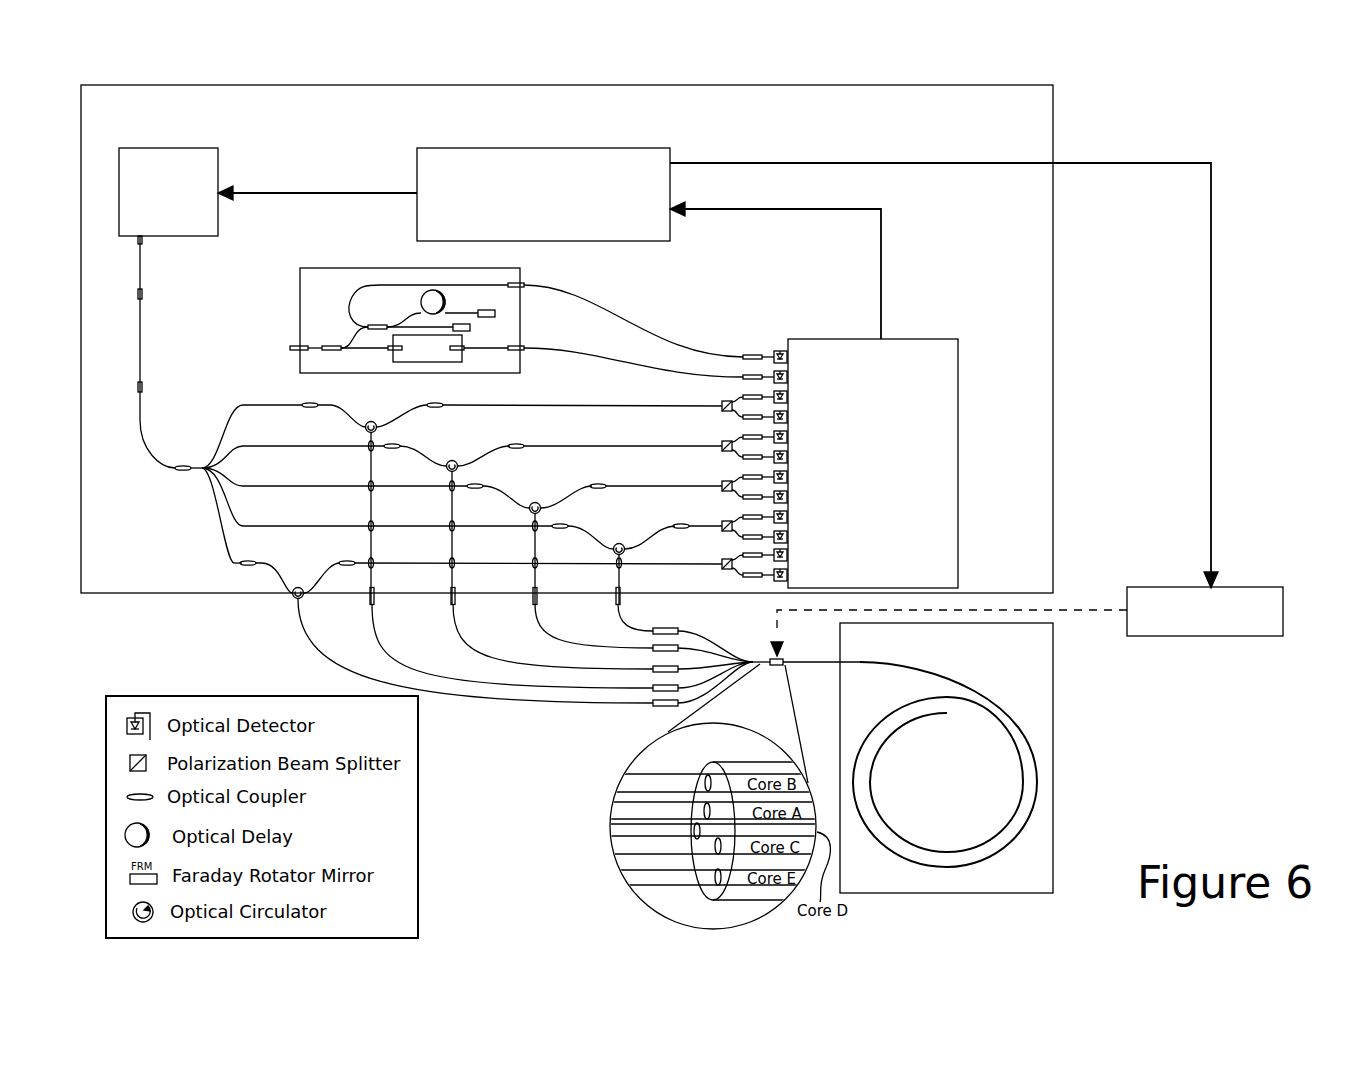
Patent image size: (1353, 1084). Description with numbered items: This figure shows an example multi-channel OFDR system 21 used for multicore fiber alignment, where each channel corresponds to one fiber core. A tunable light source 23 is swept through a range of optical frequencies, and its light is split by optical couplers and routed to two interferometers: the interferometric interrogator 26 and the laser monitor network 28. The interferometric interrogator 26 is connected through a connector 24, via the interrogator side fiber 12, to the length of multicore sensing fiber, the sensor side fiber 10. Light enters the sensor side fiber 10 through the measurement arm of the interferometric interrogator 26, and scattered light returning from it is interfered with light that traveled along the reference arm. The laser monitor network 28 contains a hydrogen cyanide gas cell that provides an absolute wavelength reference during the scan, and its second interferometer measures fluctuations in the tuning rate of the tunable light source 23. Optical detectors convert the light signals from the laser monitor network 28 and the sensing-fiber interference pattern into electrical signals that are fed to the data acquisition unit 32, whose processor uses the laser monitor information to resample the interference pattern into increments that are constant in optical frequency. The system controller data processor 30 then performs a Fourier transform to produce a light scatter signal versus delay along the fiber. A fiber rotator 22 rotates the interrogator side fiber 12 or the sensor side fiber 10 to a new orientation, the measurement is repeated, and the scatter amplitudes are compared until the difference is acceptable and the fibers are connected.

The multi-channel OFDR system 21 is at (592, 86).
The tunable light source 23 is at (218, 213).
The system controller data processor 30 is at (645, 147).
The laser monitor network 28 is at (520, 268).
The data acquisition unit 32 is at (958, 339).
The interferometric interrogator 26 is at (195, 497).
The connector 24 is at (777, 670).
The interrogator side fiber 12 is at (765, 657).
The fiber rotator 22 is at (1268, 587).
The sensor side fiber 10 is at (978, 688).